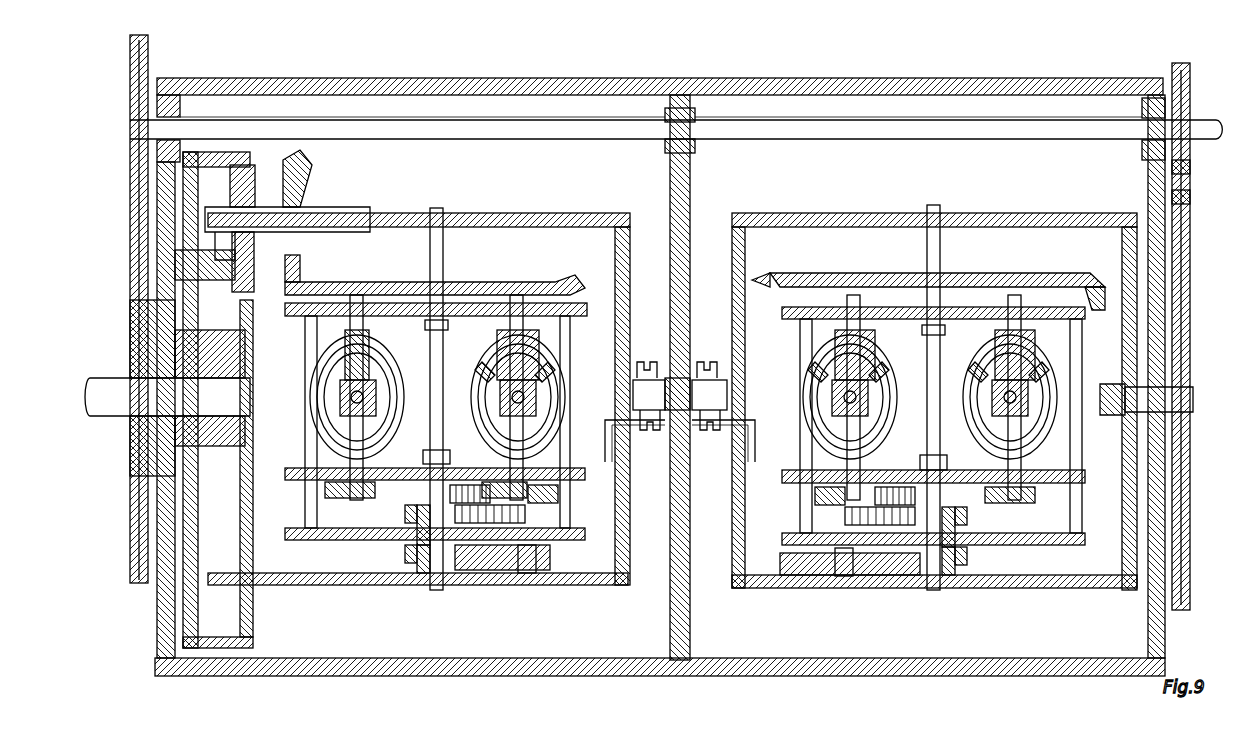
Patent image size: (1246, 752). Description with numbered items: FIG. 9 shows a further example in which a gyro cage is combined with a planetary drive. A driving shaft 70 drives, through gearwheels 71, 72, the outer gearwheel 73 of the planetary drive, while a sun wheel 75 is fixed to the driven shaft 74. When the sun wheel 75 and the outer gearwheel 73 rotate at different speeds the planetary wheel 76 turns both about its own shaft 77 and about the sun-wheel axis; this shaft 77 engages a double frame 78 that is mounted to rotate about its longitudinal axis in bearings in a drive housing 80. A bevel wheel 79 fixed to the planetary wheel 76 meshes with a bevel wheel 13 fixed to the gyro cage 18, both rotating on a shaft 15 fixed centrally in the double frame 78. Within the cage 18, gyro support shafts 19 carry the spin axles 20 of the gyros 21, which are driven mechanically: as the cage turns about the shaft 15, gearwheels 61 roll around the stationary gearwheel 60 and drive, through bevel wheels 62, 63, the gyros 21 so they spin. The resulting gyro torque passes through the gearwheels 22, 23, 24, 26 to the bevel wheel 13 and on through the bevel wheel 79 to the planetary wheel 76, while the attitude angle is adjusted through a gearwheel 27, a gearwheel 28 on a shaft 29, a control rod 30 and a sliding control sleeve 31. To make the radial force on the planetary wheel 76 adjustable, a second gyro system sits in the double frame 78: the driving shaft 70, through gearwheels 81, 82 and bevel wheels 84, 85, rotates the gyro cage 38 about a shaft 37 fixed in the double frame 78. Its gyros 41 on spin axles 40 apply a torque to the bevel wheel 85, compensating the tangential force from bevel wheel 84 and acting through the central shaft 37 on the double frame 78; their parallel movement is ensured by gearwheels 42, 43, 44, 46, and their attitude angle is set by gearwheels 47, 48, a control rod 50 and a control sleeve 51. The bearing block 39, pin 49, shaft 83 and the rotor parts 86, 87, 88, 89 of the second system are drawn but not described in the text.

The bevel wheel 13 is at (345, 280).
The shaft 15 is at (440, 276).
The gyro cage 18 is at (292, 318).
The gyro support shaft 19 is at (548, 335).
The spin axle 20 is at (560, 365).
The gyro 21 is at (560, 400).
The gearwheel 22 is at (558, 495).
The gearwheel 23 is at (470, 485).
The gearwheel 24 is at (502, 516).
The gearwheel 26 is at (405, 512).
The gearwheel 27 is at (405, 555).
The gearwheel 28 is at (495, 575).
The shaft 29 is at (540, 575).
The control rod 30 is at (605, 462).
The control sleeve 31 is at (650, 432).
The shaft 37 is at (940, 216).
The gyro cage 38 is at (790, 320).
The bearing block 39 is at (835, 350).
The spin axle 40 is at (830, 380).
The gyro 41 is at (815, 412).
The gearwheel 42 is at (815, 495).
The gearwheel 43 is at (897, 487).
The gearwheel 44 is at (845, 516).
The gearwheel 46 is at (967, 516).
The gearwheel 47 is at (967, 555).
The gearwheel 48 is at (870, 575).
The pin 49 is at (842, 572).
The control rod 50 is at (755, 458).
The control sleeve 51 is at (708, 432).
The gearwheel 60 is at (433, 340).
The gearwheel 61 is at (497, 338).
The bevel wheel 62 is at (478, 372).
The bevel wheel 63 is at (540, 392).
The driving shaft 70 is at (1195, 122).
The gearwheel 71 is at (148, 97).
The gearwheel 72 is at (157, 292).
The outer gearwheel 73 is at (250, 167).
The driven shaft 74 is at (125, 384).
The sun wheel 75 is at (245, 375).
The planetary wheel 76 is at (247, 250).
The shaft 77 is at (300, 210).
The double frame 78 is at (480, 213).
The bevel wheel 79 is at (306, 170).
The drive housing 80 is at (688, 208).
The gearwheel 81 is at (1183, 197).
The gearwheel 82 is at (1183, 282).
The shaft 83 is at (1146, 399).
The bevel wheel 84 is at (1097, 287).
The bevel wheel 85 is at (990, 278).
The gyro rotor 86 is at (990, 335).
The rotor shaft 87 is at (873, 300).
The bearing 88 is at (880, 374).
The hub 89 is at (832, 395).